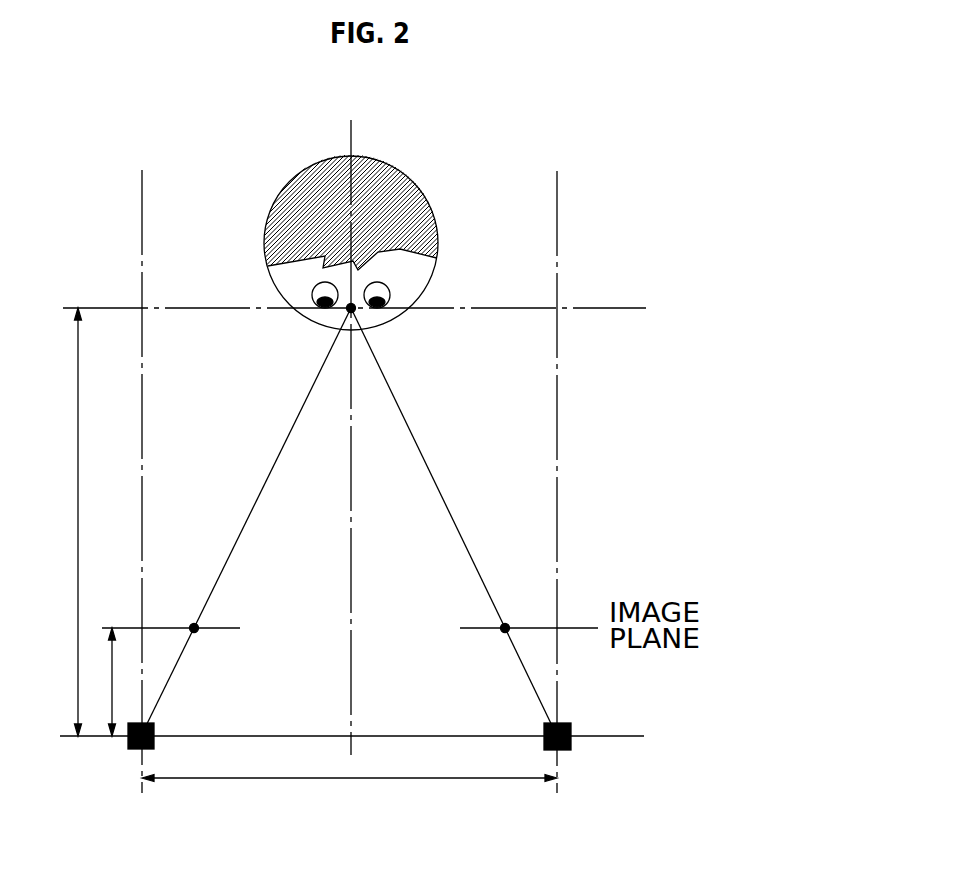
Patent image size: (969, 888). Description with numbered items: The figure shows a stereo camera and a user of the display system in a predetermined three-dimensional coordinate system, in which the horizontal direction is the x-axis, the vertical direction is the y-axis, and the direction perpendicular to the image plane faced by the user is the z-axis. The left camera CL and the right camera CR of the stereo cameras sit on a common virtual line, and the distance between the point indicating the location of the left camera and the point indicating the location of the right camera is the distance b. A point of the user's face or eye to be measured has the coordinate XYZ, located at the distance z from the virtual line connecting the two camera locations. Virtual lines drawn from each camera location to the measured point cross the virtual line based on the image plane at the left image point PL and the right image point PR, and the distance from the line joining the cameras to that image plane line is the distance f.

The coordinate of a point to be measured XYZ is at (289, 331).
The left image point PL is at (265, 611).
The right image point PR is at (436, 611).
The left camera CL is at (123, 750).
The right camera CR is at (576, 751).
The distance to the point to be measured z is at (67, 522).
The distance to the image plane f is at (104, 682).
The distance between the cameras b is at (349, 797).